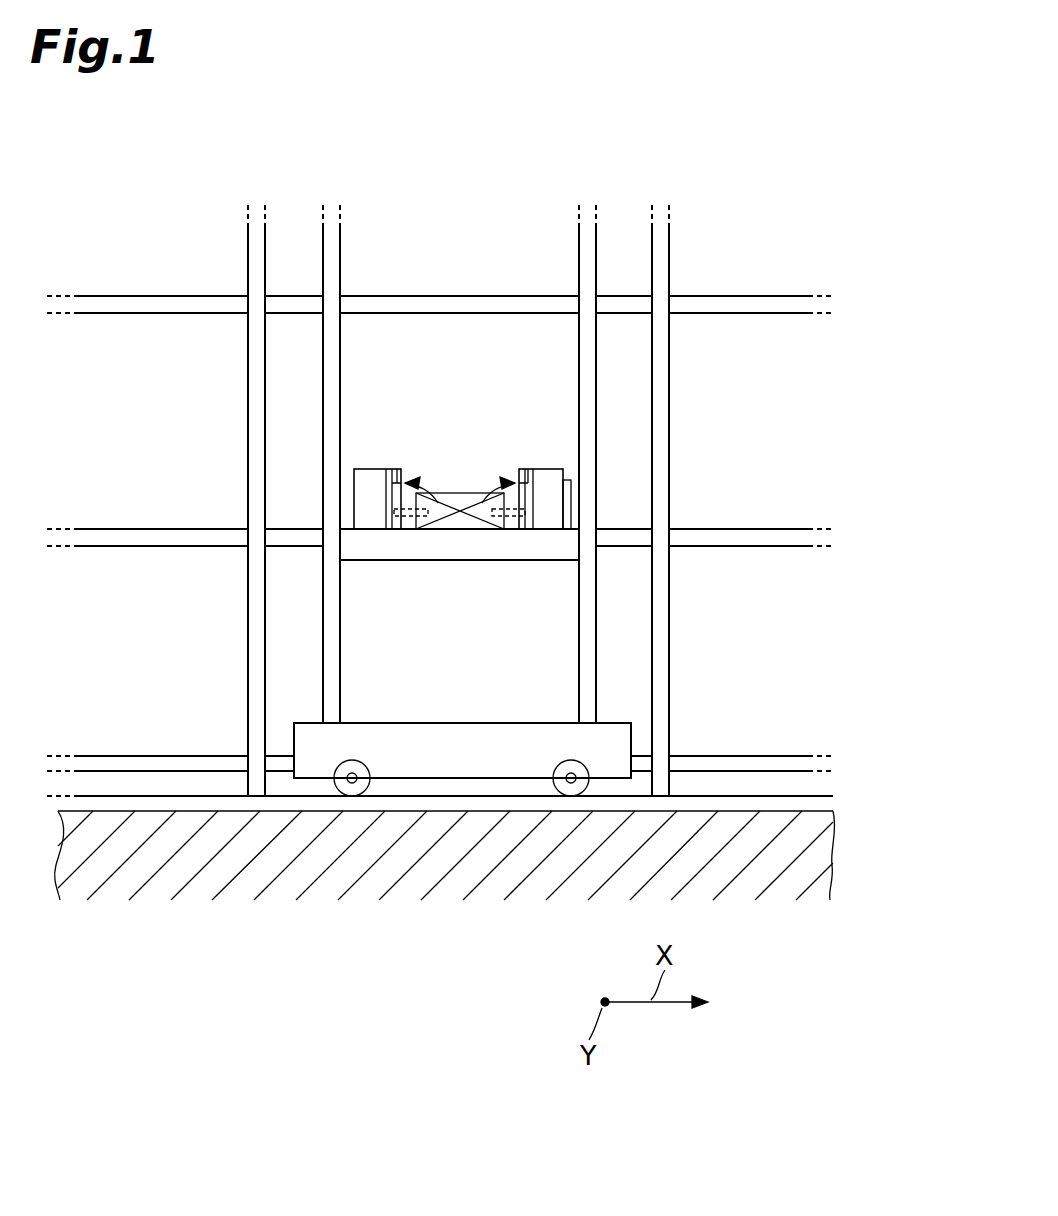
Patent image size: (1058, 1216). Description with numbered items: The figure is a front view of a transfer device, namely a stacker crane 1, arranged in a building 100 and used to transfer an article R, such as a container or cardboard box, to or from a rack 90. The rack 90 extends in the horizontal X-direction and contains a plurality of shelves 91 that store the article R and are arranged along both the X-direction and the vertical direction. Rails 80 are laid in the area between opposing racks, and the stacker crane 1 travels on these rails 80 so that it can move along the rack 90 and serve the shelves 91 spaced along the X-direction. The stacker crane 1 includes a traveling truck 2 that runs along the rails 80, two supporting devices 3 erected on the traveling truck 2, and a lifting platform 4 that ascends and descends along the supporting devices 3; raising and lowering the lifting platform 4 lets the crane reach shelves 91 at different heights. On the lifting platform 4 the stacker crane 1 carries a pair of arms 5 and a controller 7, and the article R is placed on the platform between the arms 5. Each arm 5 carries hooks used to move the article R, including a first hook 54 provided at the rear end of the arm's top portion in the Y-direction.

The building 100 is at (758, 97).
The rack 90 is at (787, 216).
The shelf 91 is at (757, 527).
The rail 80 is at (697, 805).
The stacker crane 1 is at (615, 465).
The traveling truck 2 is at (463, 737).
The supporting device 3 is at (332, 655).
The lifting platform 4 is at (463, 545).
The arm 5 is at (368, 455).
The first hook 54 is at (400, 468).
The article R is at (455, 495).
The controller 7 is at (570, 530).